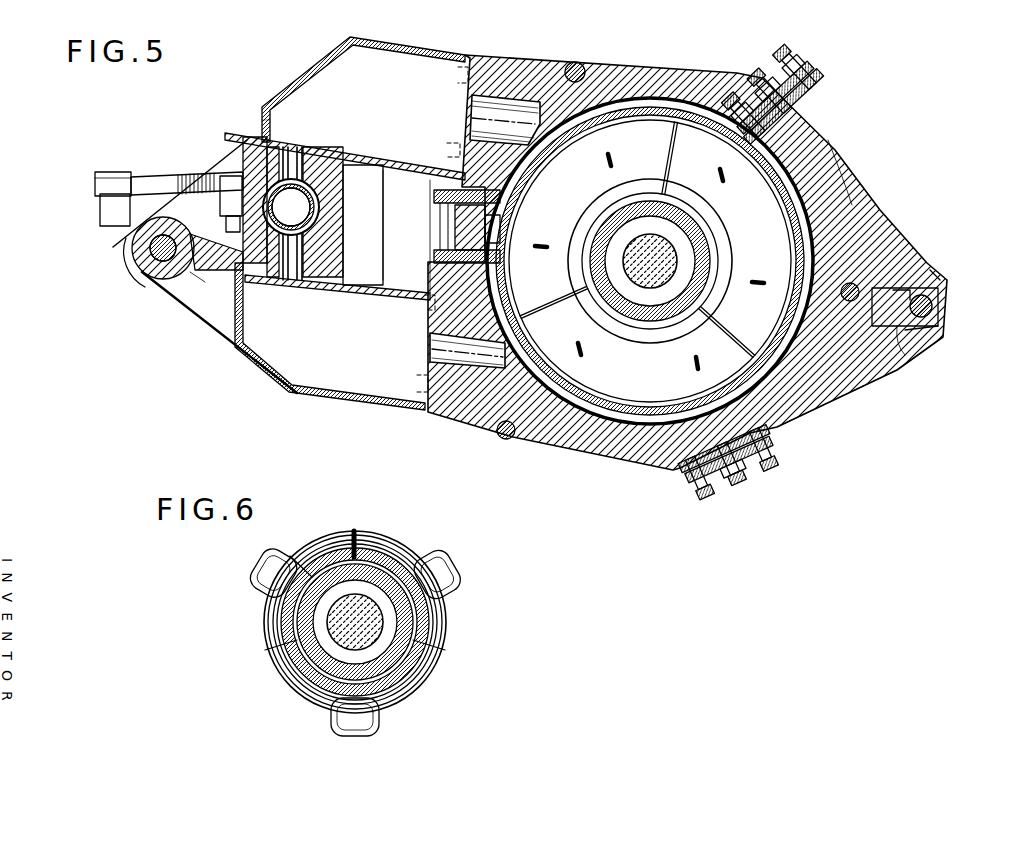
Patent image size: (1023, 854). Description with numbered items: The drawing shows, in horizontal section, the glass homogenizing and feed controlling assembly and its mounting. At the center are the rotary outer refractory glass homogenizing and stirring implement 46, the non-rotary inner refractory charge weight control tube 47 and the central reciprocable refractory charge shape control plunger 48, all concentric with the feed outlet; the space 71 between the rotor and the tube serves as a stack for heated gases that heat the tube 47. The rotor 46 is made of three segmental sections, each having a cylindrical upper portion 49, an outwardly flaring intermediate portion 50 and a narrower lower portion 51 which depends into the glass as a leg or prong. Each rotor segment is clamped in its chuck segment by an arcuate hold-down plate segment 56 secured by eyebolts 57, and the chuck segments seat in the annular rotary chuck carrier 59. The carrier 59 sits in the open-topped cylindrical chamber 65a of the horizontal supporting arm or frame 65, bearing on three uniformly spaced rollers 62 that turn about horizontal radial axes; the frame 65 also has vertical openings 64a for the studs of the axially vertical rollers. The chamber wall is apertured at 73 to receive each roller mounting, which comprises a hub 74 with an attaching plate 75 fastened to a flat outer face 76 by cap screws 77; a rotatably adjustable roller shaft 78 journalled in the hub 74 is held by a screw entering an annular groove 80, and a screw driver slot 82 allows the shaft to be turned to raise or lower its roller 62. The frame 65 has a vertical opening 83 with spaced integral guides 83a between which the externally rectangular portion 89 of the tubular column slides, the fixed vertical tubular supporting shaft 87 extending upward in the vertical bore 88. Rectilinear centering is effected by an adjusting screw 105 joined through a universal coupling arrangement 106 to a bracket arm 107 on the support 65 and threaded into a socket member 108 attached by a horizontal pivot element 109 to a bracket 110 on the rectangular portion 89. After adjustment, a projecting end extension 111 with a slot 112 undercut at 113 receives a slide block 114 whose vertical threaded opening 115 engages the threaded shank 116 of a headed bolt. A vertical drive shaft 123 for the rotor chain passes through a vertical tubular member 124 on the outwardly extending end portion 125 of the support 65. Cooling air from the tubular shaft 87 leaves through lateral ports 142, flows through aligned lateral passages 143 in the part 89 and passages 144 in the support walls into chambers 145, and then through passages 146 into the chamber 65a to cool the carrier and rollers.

In FIG. 6, the rotary outer refractory glass homogenizing and stirring implement 46 is at (384, 532).
In FIG. 5, the non-rotary inner refractory charge weight control tube 47 is at (683, 314).
In FIG. 6, the non-rotary inner refractory charge weight control tube 47 is at (305, 676).
In FIG. 5, the central reciprocable vertical refractory charge shape control plunger 48 is at (672, 259).
In FIG. 6, the central reciprocable vertical refractory charge shape control plunger 48 is at (345, 620).
In FIG. 6, the cylindrical upper portion 49 is at (432, 621).
In FIG. 6, the outwardly flaring intermediate portion 50 is at (438, 646).
In FIG. 6, the lower portion 51 is at (446, 567).
In FIG. 5, the arcuate hold-down plate segment 56 is at (727, 217).
In FIG. 5, the eyebolts 57 is at (577, 344).
In FIG. 5, the annular rotary chuck carrier 59 is at (868, 222).
In FIG. 5, the rollers 62 is at (735, 137).
In FIG. 5, the vertical openings 64a is at (575, 62).
In FIG. 5, the horizontal supporting arm or frame 65 is at (860, 372).
In FIG. 5, the cylindrical chamber 65a is at (840, 195).
In FIG. 6, the space between the rotor and the tube 71 is at (350, 546).
In FIG. 5, the apertures 73 is at (784, 93).
In FIG. 5, the hub 74 is at (808, 132).
In FIG. 5, the attaching plate 75 is at (841, 83).
In FIG. 5, the flat outer face 76 is at (807, 92).
In FIG. 5, the cap screws 77 is at (765, 77).
In FIG. 5, the rotatably adjustable roller shaft 78 is at (816, 63).
In FIG. 5, the annular groove 80 is at (818, 143).
In FIG. 5, the screw driver slot 82 is at (805, 462).
In FIG. 5, the vertical opening 83 is at (328, 233).
In FIG. 5, the spaced integral guides 83a is at (315, 170).
In FIG. 5, the fixed vertical tubular supporting shaft 87 is at (312, 213).
In FIG. 5, the vertical bore 88 is at (316, 201).
In FIG. 5, the externally rectangular portion 89 is at (318, 186).
In FIG. 5, the adjusting screw 105 is at (160, 178).
In FIG. 5, the universal coupling arrangement 106 is at (95, 188).
In FIG. 5, the bracket arm 107 is at (116, 233).
In FIG. 5, the socket member 108 is at (200, 174).
In FIG. 5, the horizontal pivot element 109 is at (228, 214).
In FIG. 5, the bracket 110 is at (215, 262).
In FIG. 5, the projecting end extension 111 is at (935, 270).
In FIG. 5, the slot 112 is at (935, 307).
In FIG. 5, the undercut 113 is at (935, 330).
In FIG. 5, the slide block 114 is at (940, 296).
In FIG. 5, the vertical threaded opening 115 is at (900, 354).
In FIG. 5, the threaded shank 116 is at (943, 284).
In FIG. 5, the vertical drive shaft 123 is at (150, 256).
In FIG. 5, the vertical tubular member 124 is at (150, 284).
In FIG. 5, the outwardly extending end portion 125 is at (186, 274).
In FIG. 5, the lateral ports 142 is at (296, 165).
In FIG. 5, the lateral passages 143 is at (268, 264).
In FIG. 5, the lateral passages 144 is at (280, 140).
In FIG. 5, the chambers 145 is at (380, 103).
In FIG. 5, the passages 146 is at (487, 116).